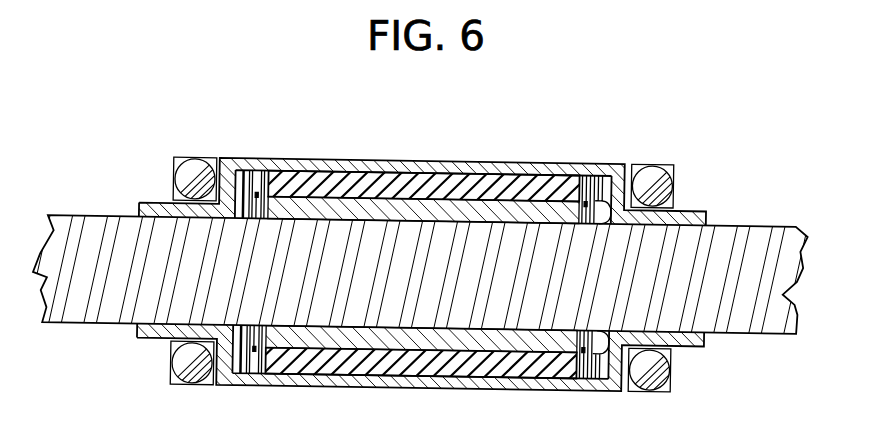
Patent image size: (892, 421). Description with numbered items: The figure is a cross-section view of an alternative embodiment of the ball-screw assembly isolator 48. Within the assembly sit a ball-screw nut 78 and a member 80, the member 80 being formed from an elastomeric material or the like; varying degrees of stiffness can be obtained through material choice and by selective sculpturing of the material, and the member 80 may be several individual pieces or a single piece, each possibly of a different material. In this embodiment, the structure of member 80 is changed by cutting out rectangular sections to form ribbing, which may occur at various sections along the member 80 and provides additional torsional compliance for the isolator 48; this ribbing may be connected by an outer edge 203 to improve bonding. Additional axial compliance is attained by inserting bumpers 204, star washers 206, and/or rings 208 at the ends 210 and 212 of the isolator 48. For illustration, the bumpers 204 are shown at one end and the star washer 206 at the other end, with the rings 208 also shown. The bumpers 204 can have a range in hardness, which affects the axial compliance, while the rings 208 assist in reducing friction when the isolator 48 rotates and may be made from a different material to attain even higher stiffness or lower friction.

The isolator 48 is at (446, 239).
The ball-screw nut 78 is at (521, 205).
The member 80 is at (470, 172).
The outer edge 203 is at (370, 176).
The bumpers 204 is at (598, 170).
The star washers 206 is at (246, 177).
The rings 208 is at (257, 203).
The end 210 is at (623, 161).
The end 212 is at (225, 161).